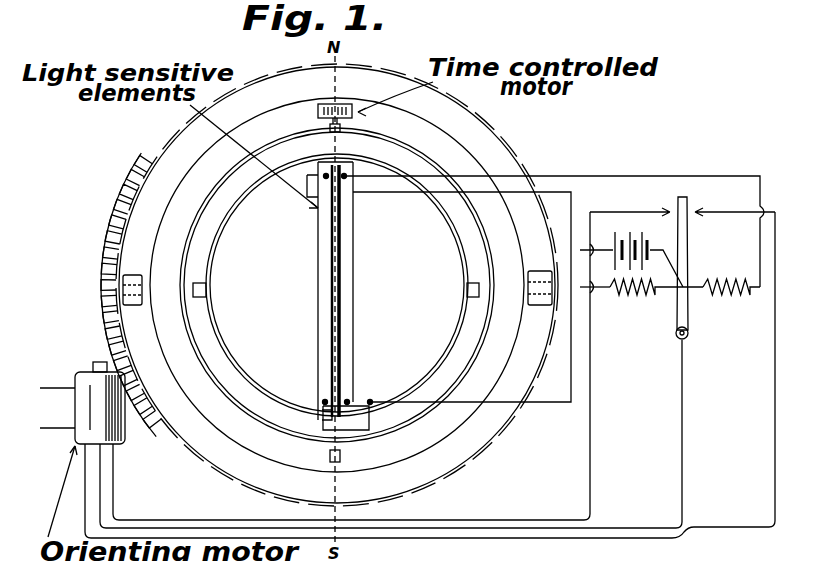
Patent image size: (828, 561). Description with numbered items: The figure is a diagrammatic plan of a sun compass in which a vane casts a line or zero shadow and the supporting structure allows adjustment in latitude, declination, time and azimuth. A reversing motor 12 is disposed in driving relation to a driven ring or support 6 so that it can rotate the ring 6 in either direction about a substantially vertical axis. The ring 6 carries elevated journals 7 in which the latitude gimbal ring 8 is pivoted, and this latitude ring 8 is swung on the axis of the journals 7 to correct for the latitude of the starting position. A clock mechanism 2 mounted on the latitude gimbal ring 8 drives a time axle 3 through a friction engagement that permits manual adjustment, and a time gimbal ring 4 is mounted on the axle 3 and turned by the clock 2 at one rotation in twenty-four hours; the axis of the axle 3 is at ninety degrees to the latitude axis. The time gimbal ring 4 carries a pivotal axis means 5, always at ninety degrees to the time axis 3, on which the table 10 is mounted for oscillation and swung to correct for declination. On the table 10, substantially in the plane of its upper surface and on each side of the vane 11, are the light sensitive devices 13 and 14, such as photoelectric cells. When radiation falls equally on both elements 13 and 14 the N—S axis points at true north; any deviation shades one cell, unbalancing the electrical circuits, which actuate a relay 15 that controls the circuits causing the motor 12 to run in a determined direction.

The clock mechanism 2 is at (322, 106).
The time axle 3 is at (333, 135).
The time gimbal ring 4 is at (236, 214).
The pivotal axis means 5 is at (208, 290).
The driven ring 6 is at (329, 285).
The elevated journals 7 is at (138, 275).
The latitude gimbal ring 8 is at (337, 285).
The table 10 is at (337, 285).
The vane 11 is at (341, 306).
The reversing motor 12 is at (78, 441).
The light sensitive device 13 is at (322, 241).
The light sensitive device 14 is at (347, 263).
The relay 15 is at (677, 268).